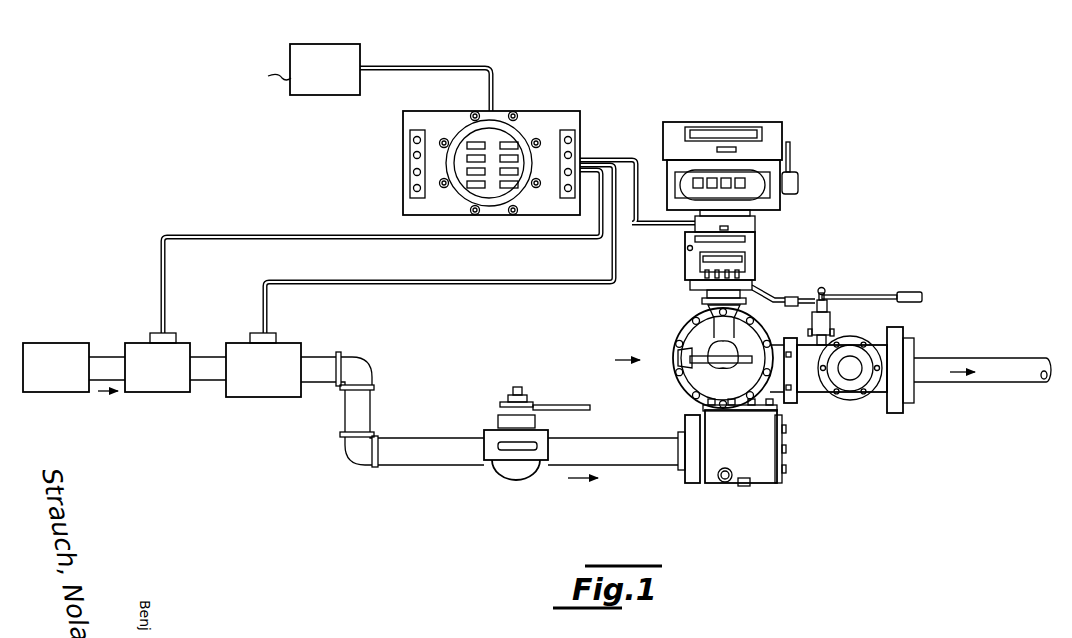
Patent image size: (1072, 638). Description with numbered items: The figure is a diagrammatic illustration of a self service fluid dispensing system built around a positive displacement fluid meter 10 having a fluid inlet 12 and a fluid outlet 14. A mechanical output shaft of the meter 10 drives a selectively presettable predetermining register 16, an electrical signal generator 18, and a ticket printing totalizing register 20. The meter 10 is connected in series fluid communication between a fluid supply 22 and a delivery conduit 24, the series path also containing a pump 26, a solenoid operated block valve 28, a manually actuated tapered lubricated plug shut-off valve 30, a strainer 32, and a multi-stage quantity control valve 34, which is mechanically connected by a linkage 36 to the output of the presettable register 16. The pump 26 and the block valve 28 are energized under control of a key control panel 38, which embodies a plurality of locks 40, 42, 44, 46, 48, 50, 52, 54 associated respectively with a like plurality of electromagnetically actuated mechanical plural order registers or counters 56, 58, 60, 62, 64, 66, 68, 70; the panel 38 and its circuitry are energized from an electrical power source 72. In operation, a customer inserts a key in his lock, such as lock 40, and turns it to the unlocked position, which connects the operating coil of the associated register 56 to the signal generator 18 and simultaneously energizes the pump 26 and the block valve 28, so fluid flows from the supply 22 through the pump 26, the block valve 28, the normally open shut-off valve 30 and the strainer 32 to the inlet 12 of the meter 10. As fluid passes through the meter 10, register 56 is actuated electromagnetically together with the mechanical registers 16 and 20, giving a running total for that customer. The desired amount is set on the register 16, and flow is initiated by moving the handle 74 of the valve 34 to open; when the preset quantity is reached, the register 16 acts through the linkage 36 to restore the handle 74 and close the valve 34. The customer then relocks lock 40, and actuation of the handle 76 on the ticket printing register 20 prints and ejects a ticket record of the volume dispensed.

The positive displacement fluid meter 10 is at (680, 330).
The fluid inlet 12 is at (718, 407).
The fluid outlet 14 is at (778, 395).
The presettable predetermining register 16 is at (762, 257).
The electrical signal generator 18 is at (758, 224).
The ticket printing totalizing register 20 is at (722, 121).
The fluid supply 22 is at (57, 348).
The delivery conduit 24 is at (996, 360).
The pump 26 is at (182, 350).
The solenoid operated block valve 28 is at (293, 344).
The manually actuated tapered lubricated plug shut-off valve 30 is at (515, 466).
The strainer 32 is at (763, 468).
The multi-stage quantity control valve 34 is at (846, 350).
The linkage 36 is at (778, 295).
The key control panel 38 is at (490, 155).
The lock 40 is at (413, 140).
The lock 42 is at (413, 155).
The lock 44 is at (413, 172).
The lock 46 is at (413, 188).
The lock 48 is at (571, 136).
The lock 50 is at (571, 152).
The lock 52 is at (571, 170).
The lock 54 is at (570, 192).
The electromagnetically actuated plural order register 56 is at (477, 141).
The electromagnetically actuated plural order register 58 is at (467, 156).
The electromagnetically actuated plural order register 60 is at (470, 172).
The electromagnetically actuated plural order register 62 is at (473, 186).
The electromagnetically actuated plural order register 64 is at (508, 142).
The electromagnetically actuated plural order register 66 is at (515, 156).
The electromagnetically actuated plural order register 68 is at (516, 172).
The electromagnetically actuated plural order register 70 is at (505, 186).
The electrical power source 72 is at (343, 46).
The handle 74 is at (897, 300).
The handle 76 is at (788, 166).